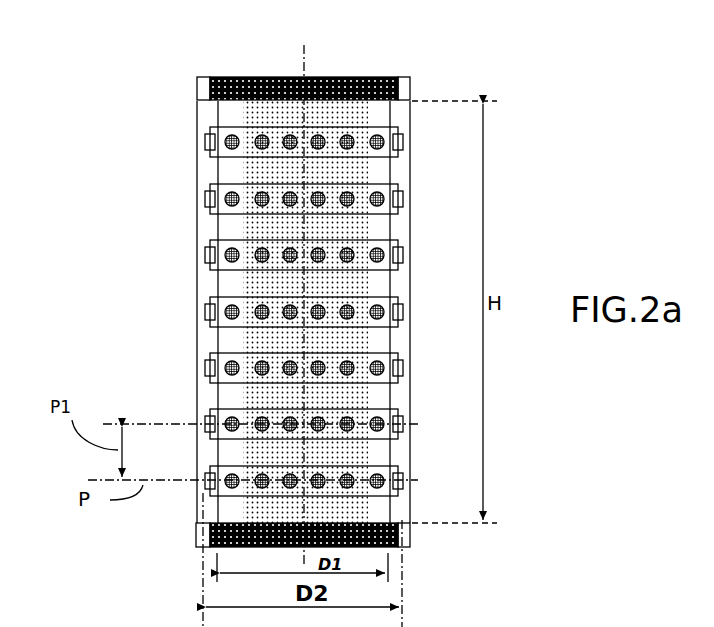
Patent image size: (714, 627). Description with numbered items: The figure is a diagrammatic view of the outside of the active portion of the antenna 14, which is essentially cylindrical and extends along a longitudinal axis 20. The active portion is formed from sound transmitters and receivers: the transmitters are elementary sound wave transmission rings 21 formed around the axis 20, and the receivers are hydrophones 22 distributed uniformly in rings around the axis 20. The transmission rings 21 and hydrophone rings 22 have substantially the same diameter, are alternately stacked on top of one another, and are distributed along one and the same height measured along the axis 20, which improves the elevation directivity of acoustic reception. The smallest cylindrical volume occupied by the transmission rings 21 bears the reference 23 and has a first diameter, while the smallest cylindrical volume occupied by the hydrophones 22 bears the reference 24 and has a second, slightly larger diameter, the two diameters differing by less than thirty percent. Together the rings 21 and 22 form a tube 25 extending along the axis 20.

The antenna 14 is at (104, 285).
The longitudinal axis 20 is at (303, 67).
The elementary sound wave transmission rings 21 is at (355, 510).
The hydrophones 22 is at (204, 480).
The minimum volume occupied by the elementary transmission rings 23 is at (215, 555).
The minimum volume occupied by the hydrophones 24 is at (202, 598).
The tube 25 is at (249, 64).